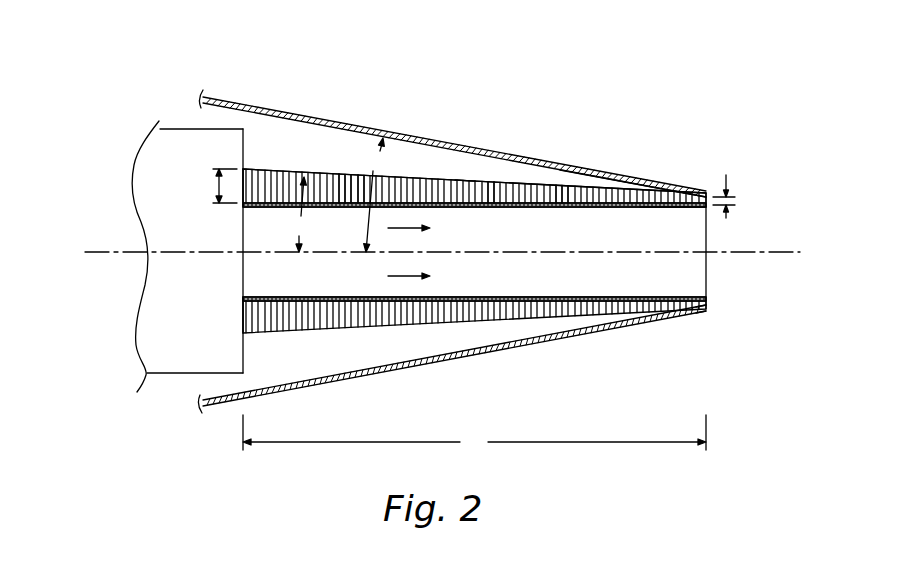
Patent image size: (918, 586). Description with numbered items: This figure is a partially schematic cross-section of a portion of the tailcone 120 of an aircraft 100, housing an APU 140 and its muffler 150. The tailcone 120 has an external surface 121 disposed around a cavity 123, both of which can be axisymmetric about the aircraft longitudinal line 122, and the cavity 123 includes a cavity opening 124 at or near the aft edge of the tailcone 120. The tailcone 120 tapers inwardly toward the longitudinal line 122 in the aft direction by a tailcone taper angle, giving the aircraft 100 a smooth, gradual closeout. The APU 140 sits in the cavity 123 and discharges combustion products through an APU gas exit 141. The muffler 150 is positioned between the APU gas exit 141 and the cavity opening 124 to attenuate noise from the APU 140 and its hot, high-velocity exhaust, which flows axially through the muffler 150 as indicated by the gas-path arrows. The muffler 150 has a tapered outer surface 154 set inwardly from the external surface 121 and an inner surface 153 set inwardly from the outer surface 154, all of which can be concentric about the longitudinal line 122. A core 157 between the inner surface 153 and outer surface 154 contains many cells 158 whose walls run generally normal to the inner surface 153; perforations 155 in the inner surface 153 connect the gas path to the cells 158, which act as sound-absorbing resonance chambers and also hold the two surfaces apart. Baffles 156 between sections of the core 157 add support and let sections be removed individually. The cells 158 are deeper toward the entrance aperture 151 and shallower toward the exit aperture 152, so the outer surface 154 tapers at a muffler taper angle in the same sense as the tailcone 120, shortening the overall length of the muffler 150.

The aircraft 100 is at (690, 47).
The tailcone 120 is at (562, 138).
The external surface 121 is at (597, 171).
The aircraft longitudinal line 122 is at (760, 253).
The cavity 123 is at (468, 340).
The cavity opening 124 is at (707, 308).
The APU 140 is at (160, 158).
The APU gas exit 141 is at (243, 228).
The muffler 150 is at (402, 330).
The entrance aperture 151 is at (242, 280).
The exit aperture 152 is at (706, 285).
The inner surface 153 is at (680, 207).
The outer surface 154 is at (422, 180).
The perforations 155 is at (630, 207).
The baffles 156 is at (322, 192).
The core 157 is at (465, 170).
The cells 158 is at (563, 190).